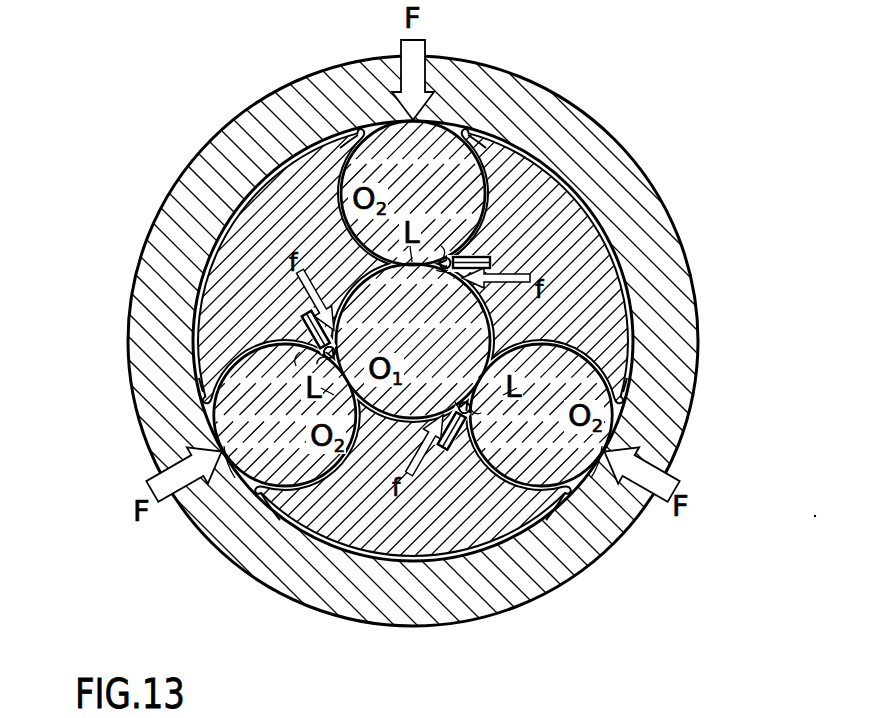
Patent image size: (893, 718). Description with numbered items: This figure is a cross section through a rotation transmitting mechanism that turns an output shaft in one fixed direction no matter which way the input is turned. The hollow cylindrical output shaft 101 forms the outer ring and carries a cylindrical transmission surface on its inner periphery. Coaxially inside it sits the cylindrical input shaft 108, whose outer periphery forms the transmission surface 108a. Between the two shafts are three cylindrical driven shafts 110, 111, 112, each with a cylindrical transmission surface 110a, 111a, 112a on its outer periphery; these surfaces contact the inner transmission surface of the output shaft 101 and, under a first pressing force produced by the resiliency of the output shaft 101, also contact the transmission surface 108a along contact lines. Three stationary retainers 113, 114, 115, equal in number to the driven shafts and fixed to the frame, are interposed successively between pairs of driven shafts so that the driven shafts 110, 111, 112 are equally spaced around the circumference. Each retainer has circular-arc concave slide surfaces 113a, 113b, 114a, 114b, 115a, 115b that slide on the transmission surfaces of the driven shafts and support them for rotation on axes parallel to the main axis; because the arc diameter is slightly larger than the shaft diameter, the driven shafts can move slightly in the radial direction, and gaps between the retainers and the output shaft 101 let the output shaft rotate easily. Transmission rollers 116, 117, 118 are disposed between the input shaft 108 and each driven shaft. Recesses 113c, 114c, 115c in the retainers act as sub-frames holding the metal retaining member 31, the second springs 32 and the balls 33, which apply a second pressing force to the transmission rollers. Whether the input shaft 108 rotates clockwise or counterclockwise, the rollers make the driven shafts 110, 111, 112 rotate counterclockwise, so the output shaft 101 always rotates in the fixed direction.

The output shaft 101 is at (528, 78).
The input shaft 108 is at (474, 365).
The transmission surface 108a is at (500, 328).
The driven shaft 110 is at (414, 171).
The transmission surface 110a is at (350, 108).
The driven shaft 111 is at (281, 468).
The transmission surface 111a is at (217, 470).
The driven shaft 112 is at (564, 381).
The transmission surface 112a is at (603, 478).
The stationary retainer 113 is at (205, 258).
The slide surface 113a is at (239, 156).
The slide surface 113b is at (205, 385).
The recess 113c is at (290, 275).
The stationary retainer 114 is at (368, 552).
The slide surface 114a is at (227, 566).
The slide surface 114b is at (547, 505).
The recess 114c is at (454, 518).
The stationary retainer 115 is at (446, 359).
The slide surface 115a is at (688, 371).
The slide surface 115b is at (472, 84).
The recess 115c is at (492, 262).
The transmission roller 116 is at (442, 272).
The transmission roller 117 is at (269, 378).
The transmission roller 118 is at (456, 409).
The metal retaining member 31 is at (462, 256).
The second spring 32 is at (492, 255).
The ball 33 is at (447, 240).